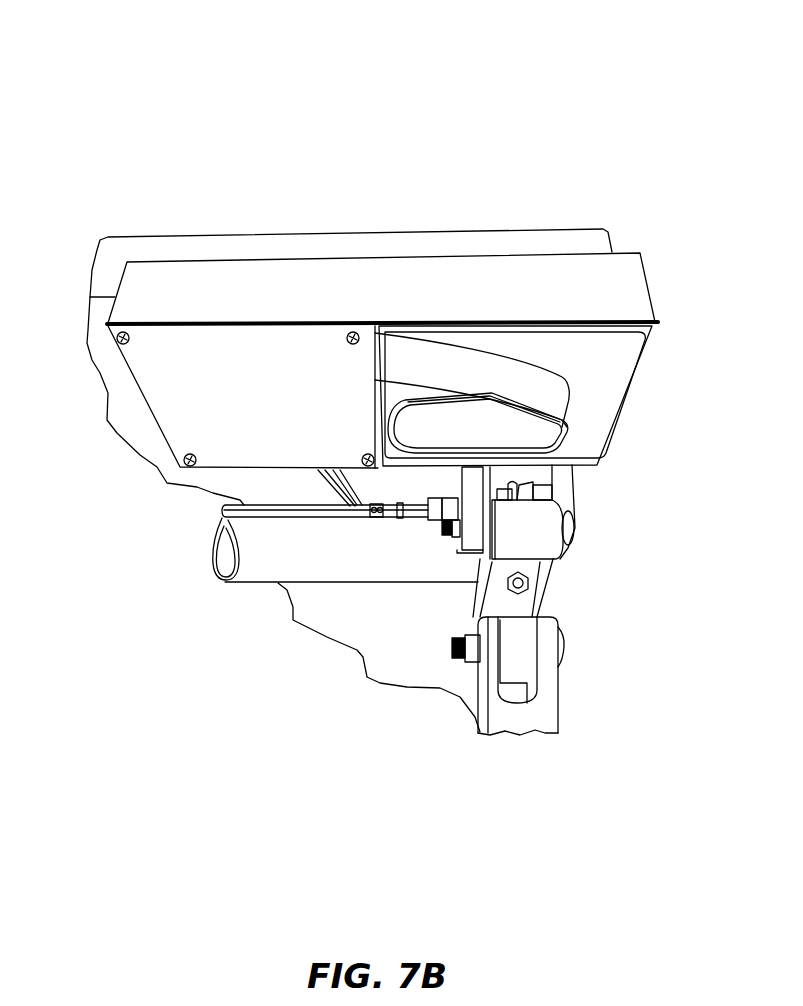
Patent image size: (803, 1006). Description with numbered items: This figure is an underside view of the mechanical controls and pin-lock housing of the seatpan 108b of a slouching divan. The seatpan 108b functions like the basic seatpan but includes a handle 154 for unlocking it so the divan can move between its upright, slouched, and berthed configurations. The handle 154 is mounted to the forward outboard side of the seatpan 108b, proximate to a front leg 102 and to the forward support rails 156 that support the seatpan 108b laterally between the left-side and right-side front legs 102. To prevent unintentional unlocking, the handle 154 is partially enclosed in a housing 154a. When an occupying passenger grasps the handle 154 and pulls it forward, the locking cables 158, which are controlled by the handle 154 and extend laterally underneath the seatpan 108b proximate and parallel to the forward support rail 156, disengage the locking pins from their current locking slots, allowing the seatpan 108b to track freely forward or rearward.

The seatpan 108b is at (102, 68).
The housing 154a is at (637, 298).
The handle 154 is at (547, 392).
The locking cables 158 is at (223, 508).
The forward support rails 156 is at (275, 550).
The front leg 102 is at (537, 703).